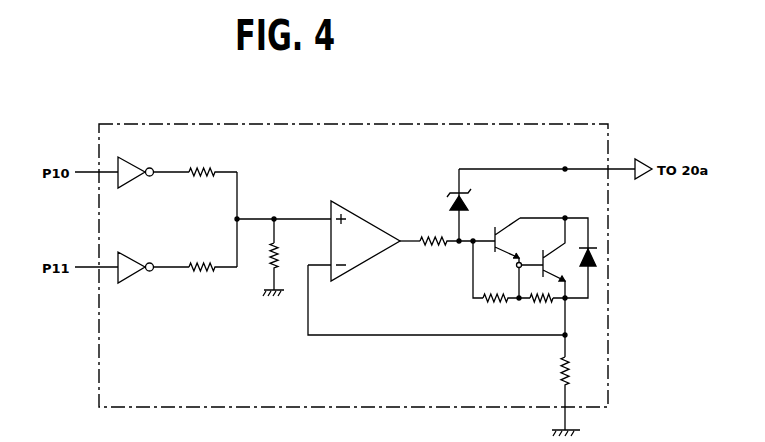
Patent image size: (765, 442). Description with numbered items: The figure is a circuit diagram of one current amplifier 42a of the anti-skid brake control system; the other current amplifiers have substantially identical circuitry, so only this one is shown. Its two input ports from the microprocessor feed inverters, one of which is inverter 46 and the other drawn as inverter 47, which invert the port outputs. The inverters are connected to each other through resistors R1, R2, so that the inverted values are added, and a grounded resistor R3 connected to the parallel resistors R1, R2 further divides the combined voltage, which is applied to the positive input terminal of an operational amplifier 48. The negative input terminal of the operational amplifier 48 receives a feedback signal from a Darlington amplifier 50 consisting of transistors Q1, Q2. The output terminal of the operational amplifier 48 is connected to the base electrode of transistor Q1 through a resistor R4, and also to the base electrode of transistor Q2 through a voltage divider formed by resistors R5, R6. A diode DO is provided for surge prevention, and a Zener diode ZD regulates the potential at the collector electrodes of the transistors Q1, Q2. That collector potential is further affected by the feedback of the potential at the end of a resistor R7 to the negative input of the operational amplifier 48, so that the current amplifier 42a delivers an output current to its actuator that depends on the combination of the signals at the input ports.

The current amplifier 42a is at (378, 123).
The inverter 46 is at (136, 165).
The inverter 47 is at (136, 278).
The operational amplifier 48 is at (363, 259).
The Darlington amplifier 50 is at (530, 192).
The resistor R1 is at (196, 163).
The resistor R2 is at (196, 258).
The grounded resistor R3 is at (282, 257).
The resistor R4 is at (457, 232).
The resistor R5 is at (506, 309).
The resistor R6 is at (541, 309).
The resistor R7 is at (573, 367).
The transistor Q1 is at (503, 234).
The transistor Q2 is at (539, 206).
The Zener diode ZD is at (450, 205).
The diode DO is at (598, 256).